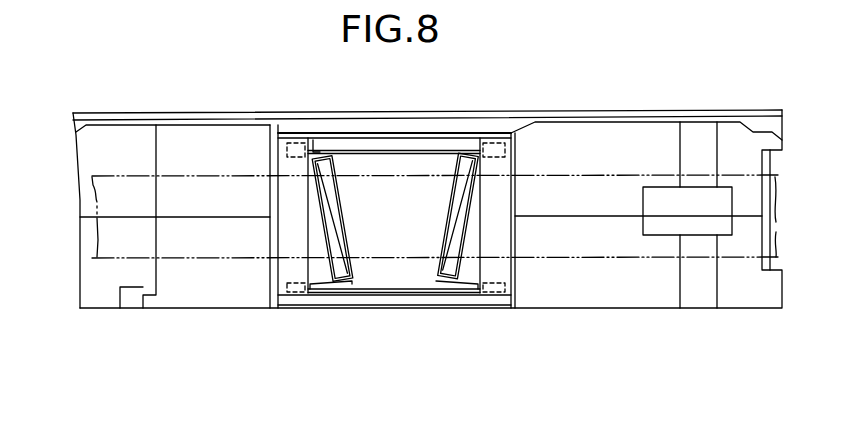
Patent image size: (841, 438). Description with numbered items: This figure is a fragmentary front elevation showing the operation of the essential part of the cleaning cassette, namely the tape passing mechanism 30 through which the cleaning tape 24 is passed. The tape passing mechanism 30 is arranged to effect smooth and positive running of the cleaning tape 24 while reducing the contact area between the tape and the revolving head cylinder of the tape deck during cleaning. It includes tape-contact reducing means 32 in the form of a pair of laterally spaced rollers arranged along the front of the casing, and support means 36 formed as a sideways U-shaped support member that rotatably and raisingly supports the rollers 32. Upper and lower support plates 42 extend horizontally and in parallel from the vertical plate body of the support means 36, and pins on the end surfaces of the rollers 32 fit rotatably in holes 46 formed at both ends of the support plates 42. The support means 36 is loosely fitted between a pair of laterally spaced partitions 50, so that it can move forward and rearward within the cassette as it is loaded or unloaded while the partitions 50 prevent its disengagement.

The cleaning tape 24 is at (588, 258).
The tape passing mechanism 30 is at (434, 321).
The tape-contact reducing means 32 is at (320, 186).
The support means 36 is at (437, 163).
The support plates 42 is at (388, 148).
The holes 46 is at (313, 148).
The partitions 50 is at (296, 232).